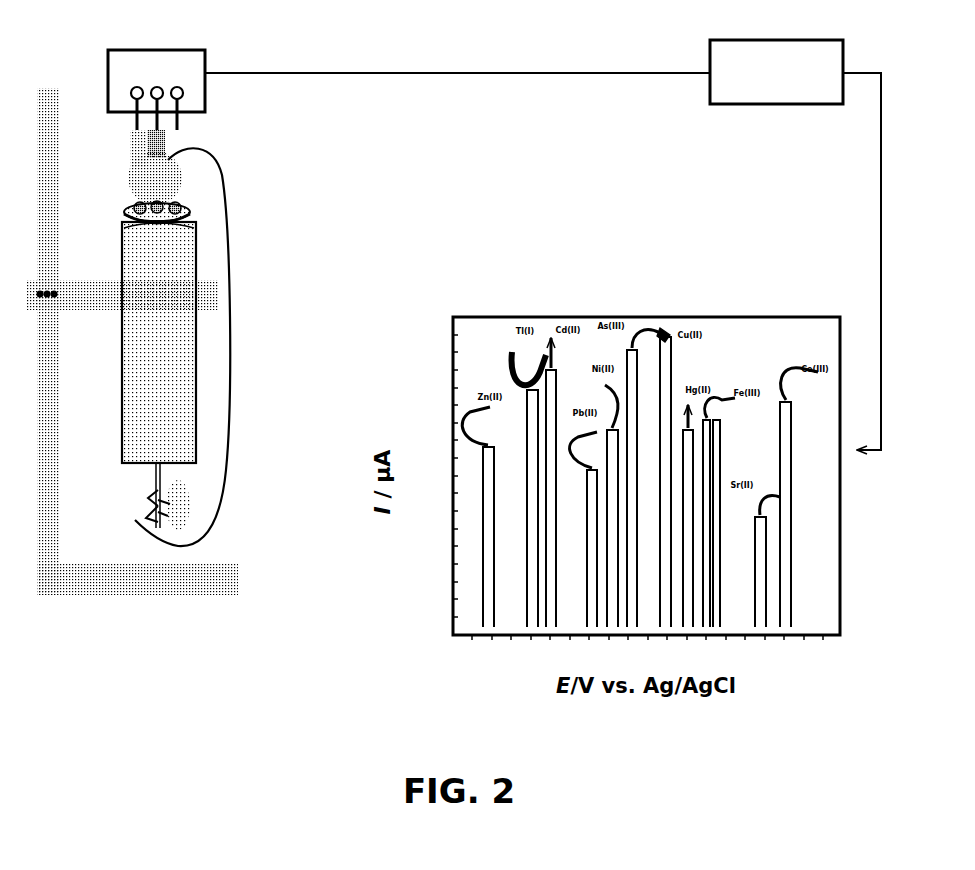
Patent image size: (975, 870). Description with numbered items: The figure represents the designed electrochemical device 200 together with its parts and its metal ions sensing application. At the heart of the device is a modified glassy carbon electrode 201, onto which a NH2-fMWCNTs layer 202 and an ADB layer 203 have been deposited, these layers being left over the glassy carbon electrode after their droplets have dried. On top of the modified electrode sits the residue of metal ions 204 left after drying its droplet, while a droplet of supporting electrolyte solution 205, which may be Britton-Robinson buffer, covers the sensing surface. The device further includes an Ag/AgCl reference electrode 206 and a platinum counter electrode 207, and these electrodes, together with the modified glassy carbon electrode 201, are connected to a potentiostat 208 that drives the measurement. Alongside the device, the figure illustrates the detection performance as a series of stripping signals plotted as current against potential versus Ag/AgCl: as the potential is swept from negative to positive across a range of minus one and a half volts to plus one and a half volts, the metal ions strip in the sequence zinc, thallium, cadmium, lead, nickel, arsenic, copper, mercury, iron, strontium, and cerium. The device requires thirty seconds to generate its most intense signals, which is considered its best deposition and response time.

The electrochemical device 200 is at (242, 358).
The modified glassy carbon electrode 201 is at (190, 245).
The NH2-fMWCNTs layer 202 is at (195, 232).
The ADB layer 203 is at (195, 222).
The residue of metal ions 204 is at (190, 210).
The droplet of supporting electrolyte solution 205 is at (182, 175).
The Ag/AgCl reference electrode 206 is at (167, 160).
The platinum counter electrode 207 is at (165, 152).
The potentiostat 208 is at (205, 55).